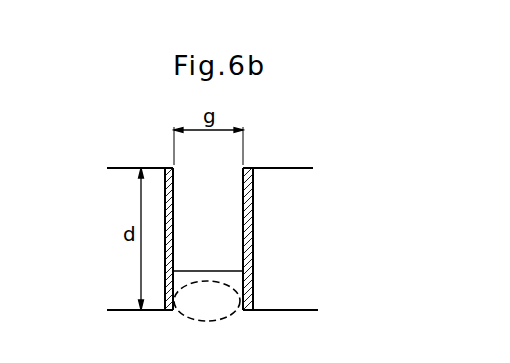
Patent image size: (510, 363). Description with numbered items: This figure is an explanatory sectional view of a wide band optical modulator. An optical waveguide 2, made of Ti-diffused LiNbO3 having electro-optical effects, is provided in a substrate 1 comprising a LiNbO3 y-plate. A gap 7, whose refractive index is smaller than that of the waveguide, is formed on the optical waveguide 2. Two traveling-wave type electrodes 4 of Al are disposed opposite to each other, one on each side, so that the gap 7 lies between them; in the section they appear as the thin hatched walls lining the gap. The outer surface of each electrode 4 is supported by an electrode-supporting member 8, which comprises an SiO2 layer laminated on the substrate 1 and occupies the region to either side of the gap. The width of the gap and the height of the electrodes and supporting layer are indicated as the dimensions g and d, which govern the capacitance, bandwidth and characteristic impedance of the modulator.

The substrate 1 is at (214, 357).
The optical waveguide 2 is at (213, 309).
The traveling-wave type electrodes 4 is at (172, 166).
The gap 7 is at (214, 232).
The electrode-supporting members 8 is at (113, 261).